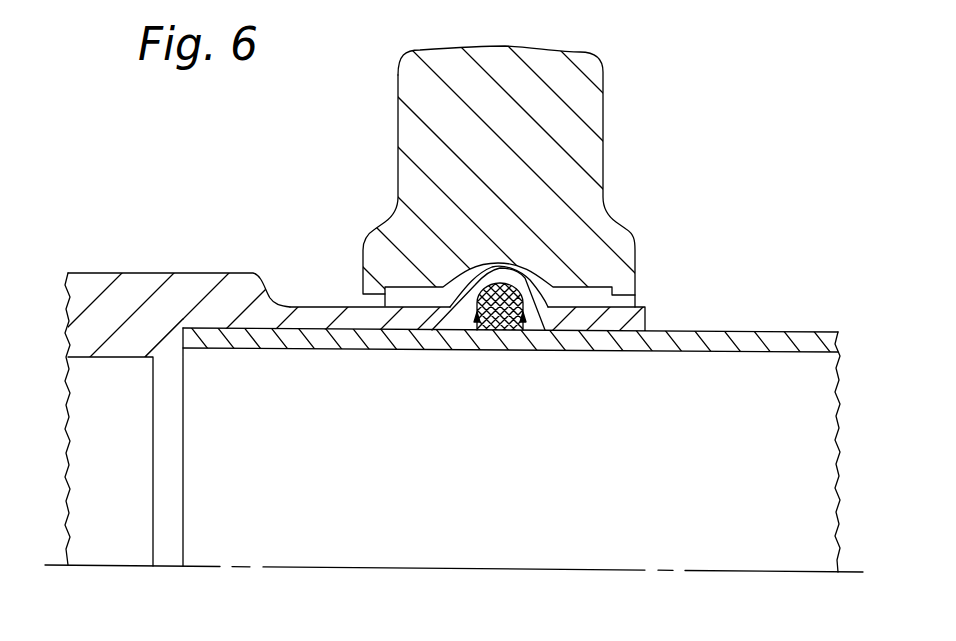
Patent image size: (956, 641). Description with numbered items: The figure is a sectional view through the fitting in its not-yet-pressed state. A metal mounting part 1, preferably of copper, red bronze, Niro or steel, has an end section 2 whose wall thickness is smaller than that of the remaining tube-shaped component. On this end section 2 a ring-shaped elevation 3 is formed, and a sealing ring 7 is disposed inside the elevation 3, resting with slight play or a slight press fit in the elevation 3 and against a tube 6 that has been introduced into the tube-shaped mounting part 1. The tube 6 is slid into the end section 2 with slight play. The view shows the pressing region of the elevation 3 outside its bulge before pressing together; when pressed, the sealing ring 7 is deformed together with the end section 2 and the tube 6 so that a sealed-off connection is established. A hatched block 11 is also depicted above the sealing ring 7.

The mounting part 1 is at (117, 310).
The end section 2 is at (510, 210).
The ring-shaped elevation 3 is at (488, 282).
The tube 6 is at (758, 345).
The sealing ring 7 is at (510, 285).
The cover block 11 is at (570, 97).